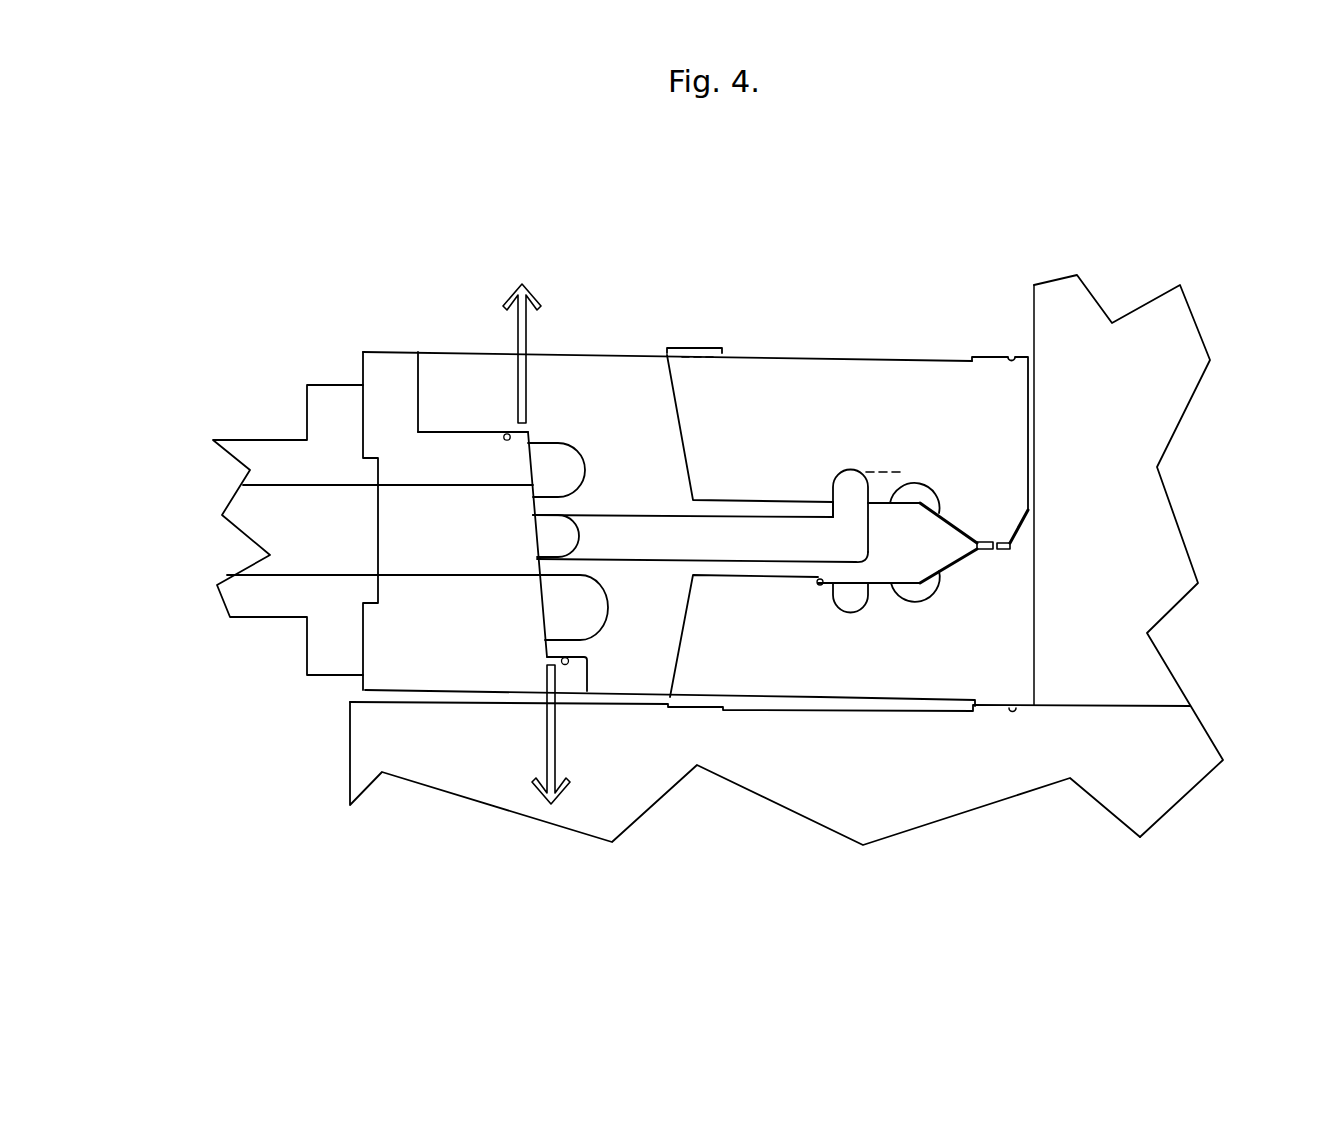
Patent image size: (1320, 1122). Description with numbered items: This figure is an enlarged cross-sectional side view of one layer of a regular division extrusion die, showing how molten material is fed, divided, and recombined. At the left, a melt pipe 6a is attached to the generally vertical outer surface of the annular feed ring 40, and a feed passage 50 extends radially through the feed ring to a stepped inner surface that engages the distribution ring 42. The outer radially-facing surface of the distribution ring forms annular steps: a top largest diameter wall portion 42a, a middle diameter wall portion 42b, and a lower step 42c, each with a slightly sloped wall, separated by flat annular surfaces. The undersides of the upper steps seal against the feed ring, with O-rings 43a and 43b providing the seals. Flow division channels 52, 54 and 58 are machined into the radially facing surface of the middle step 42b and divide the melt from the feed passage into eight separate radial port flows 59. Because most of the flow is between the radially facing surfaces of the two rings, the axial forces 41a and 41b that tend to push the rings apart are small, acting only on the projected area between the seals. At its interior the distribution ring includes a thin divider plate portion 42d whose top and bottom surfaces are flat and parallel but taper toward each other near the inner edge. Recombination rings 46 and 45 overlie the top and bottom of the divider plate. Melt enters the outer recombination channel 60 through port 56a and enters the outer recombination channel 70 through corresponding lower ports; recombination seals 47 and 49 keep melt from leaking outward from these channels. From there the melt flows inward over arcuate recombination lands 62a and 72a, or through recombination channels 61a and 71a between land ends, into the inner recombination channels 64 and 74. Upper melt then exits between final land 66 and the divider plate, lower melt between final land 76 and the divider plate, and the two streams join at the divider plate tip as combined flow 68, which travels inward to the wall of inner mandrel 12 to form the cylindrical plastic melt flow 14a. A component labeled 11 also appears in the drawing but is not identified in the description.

The melt pipe 6a is at (271, 520).
The lower housing member 11 is at (757, 780).
The inner mandrel 12 is at (1157, 556).
The cylindrical plastic melt flow 14a is at (1163, 495).
The feed ring 40 is at (336, 363).
The axial force 41a is at (484, 293).
The axial force 41b is at (521, 785).
The distribution ring 42 is at (667, 397).
The top largest diameter wall portion 42a is at (344, 461).
The middle diameter wall portion 42b is at (374, 575).
The annular step 42c is at (641, 786).
The divider plate portion 42d is at (1099, 563).
The O-ring 43a is at (427, 317).
The O-ring 43b is at (626, 808).
The recombination ring 45 is at (902, 751).
The recombination ring 46 is at (986, 317).
The recombination seal 47 is at (805, 318).
The recombination seal 49 is at (746, 704).
The feed passage 50 is at (364, 581).
The flow division channel 52 is at (432, 699).
The flow division channel 54 is at (402, 599).
The port 56a is at (798, 690).
The flow division channel 58 is at (404, 653).
The radial port flows 59 is at (700, 363).
The outer recombination channel 60 is at (898, 368).
The recombination channel 61a is at (998, 339).
The arcuate recombination land 62a is at (1011, 349).
The inner recombination channel 64 is at (1030, 379).
The final land 66 is at (1082, 506).
The combined flow 68 is at (1123, 549).
The outer recombination channel 70 is at (907, 757).
The recombination channel 71a is at (992, 725).
The arcuate recombination land 72a is at (967, 709).
The inner recombination channel 74 is at (1050, 718).
The final land 76 is at (1098, 617).